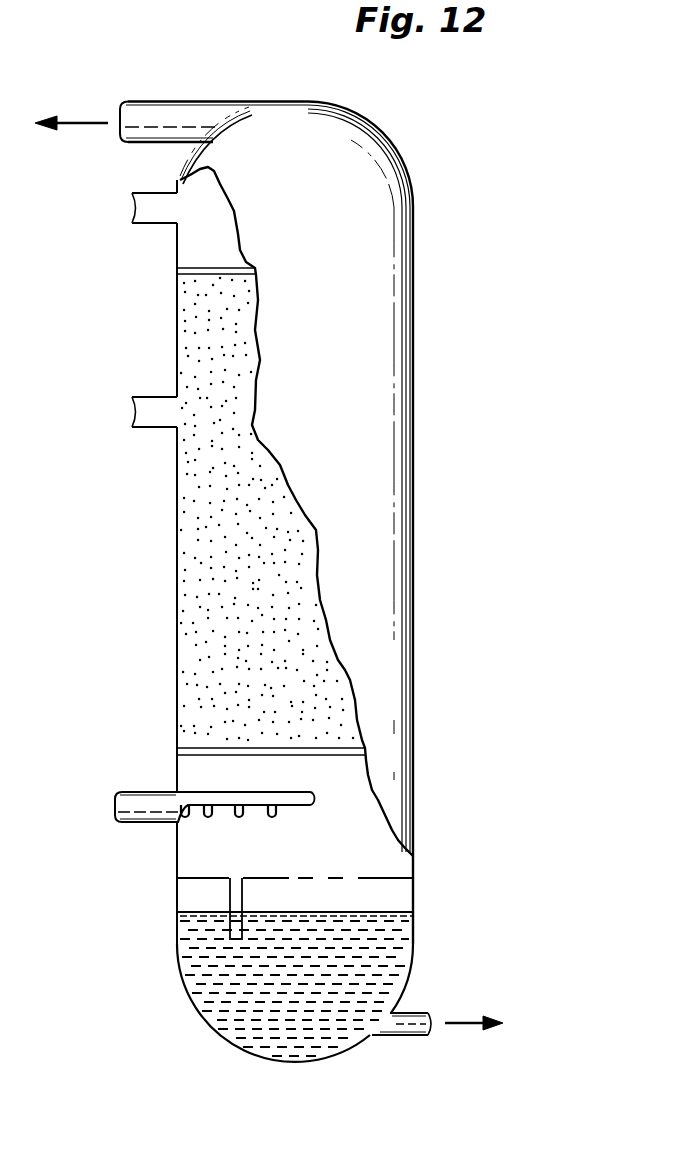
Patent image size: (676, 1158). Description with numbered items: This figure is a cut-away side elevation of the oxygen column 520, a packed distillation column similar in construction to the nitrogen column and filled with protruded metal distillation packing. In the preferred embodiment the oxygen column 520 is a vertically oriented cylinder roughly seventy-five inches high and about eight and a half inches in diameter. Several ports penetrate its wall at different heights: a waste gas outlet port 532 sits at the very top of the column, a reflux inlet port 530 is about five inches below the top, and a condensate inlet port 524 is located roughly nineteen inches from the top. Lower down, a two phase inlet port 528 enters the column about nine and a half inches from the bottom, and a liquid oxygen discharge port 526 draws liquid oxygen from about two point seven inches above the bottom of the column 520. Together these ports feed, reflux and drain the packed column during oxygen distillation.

The oxygen column 520 is at (400, 228).
The condensate inlet port 524 is at (144, 410).
The liquid oxygen discharge port 526 is at (430, 1018).
The two phase inlet port 528 is at (138, 807).
The reflux inlet port 530 is at (147, 205).
The waste gas outlet port 532 is at (163, 115).